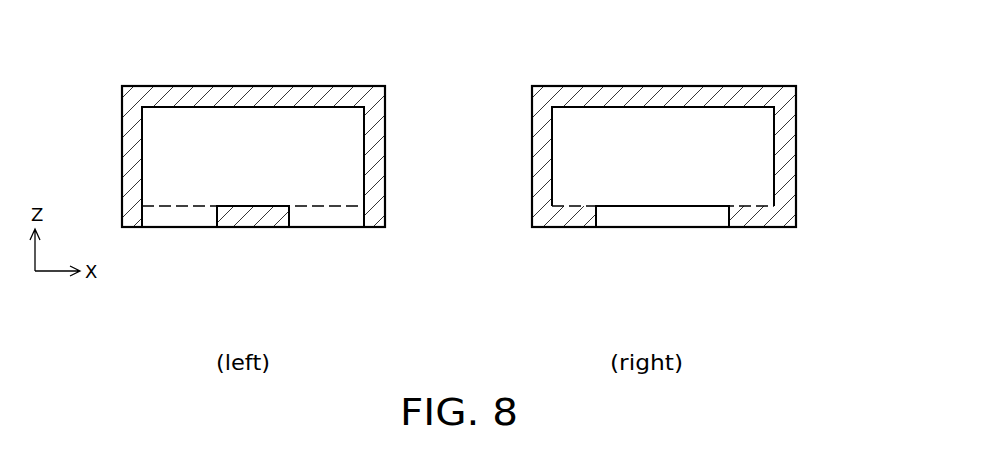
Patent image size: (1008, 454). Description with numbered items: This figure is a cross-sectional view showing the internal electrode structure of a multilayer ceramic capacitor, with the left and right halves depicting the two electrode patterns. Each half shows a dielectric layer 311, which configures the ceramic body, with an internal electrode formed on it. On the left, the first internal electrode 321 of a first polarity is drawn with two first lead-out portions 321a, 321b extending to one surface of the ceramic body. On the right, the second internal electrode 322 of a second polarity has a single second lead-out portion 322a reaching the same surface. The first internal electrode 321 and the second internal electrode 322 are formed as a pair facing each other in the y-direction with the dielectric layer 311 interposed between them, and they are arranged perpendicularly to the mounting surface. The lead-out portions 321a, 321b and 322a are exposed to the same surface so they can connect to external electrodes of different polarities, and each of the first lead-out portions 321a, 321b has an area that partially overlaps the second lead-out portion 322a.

The dielectric layer 311 is at (314, 88).
The first internal electrode 321 is at (352, 150).
The first lead-out portion 321a is at (183, 222).
The first lead-out portion 321b is at (323, 222).
The second internal electrode 322 is at (762, 150).
The second lead-out portion 322a is at (658, 222).